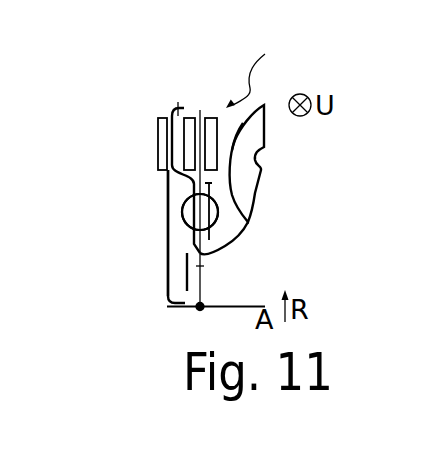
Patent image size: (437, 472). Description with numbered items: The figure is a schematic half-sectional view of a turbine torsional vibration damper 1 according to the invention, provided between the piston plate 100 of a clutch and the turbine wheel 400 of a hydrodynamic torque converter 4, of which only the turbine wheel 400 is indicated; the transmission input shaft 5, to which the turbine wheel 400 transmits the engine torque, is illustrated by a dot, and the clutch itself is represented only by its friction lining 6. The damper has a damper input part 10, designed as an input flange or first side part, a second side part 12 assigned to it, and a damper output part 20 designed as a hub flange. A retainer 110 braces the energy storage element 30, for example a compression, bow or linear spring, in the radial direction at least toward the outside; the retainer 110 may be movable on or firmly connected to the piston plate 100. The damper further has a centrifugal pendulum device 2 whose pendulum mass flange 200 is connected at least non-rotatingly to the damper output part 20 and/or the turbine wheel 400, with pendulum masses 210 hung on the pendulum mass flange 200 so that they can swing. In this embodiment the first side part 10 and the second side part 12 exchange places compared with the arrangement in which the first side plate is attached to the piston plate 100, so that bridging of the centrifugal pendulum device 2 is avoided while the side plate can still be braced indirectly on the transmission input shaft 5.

The torsional vibration damper 1 is at (183, 260).
The centrifugal pendulum device 2 is at (250, 67).
The hydrodynamic torque converter 4 is at (284, 175).
The transmission input shaft 5 is at (180, 307).
The friction lining 6 is at (158, 147).
The damper input part 10 is at (168, 243).
The second side part 12 is at (207, 232).
The damper output part 20 is at (211, 208).
The energy storage element 30 is at (182, 213).
The piston plate 100 is at (168, 173).
The retainer 110 is at (180, 197).
The pendulum mass flange 200 is at (200, 110).
The pendulum masses 210 is at (218, 128).
The turbine wheel 400 is at (229, 142).